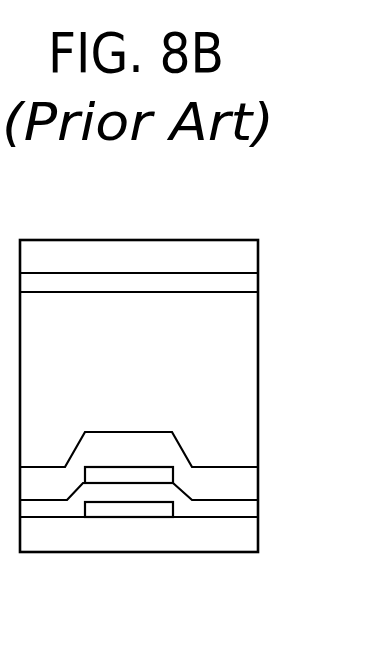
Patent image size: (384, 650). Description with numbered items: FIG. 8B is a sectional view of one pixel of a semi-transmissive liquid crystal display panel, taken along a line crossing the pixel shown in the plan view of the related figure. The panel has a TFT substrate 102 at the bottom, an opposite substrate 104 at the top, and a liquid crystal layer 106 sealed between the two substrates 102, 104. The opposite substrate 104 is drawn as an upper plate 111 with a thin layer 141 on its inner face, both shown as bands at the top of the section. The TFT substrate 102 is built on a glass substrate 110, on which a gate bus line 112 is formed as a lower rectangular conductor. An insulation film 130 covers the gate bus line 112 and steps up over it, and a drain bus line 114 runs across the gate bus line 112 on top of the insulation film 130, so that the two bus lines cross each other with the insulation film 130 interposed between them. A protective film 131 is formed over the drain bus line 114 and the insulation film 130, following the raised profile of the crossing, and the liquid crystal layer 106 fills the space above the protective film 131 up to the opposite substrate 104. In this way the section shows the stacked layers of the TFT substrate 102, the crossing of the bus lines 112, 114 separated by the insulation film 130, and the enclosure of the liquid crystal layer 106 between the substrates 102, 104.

The TFT substrate 102 is at (218, 566).
The opposite substrate 104 is at (208, 239).
The liquid crystal layer 106 is at (245, 383).
The glass substrate 110 is at (248, 538).
The counter substrate glass 111 is at (245, 255).
The gate bus line 112 is at (155, 510).
The drain bus line 114 is at (113, 477).
The insulation film 130 is at (248, 507).
The protective film 131 is at (245, 481).
The common electrode 141 is at (245, 282).